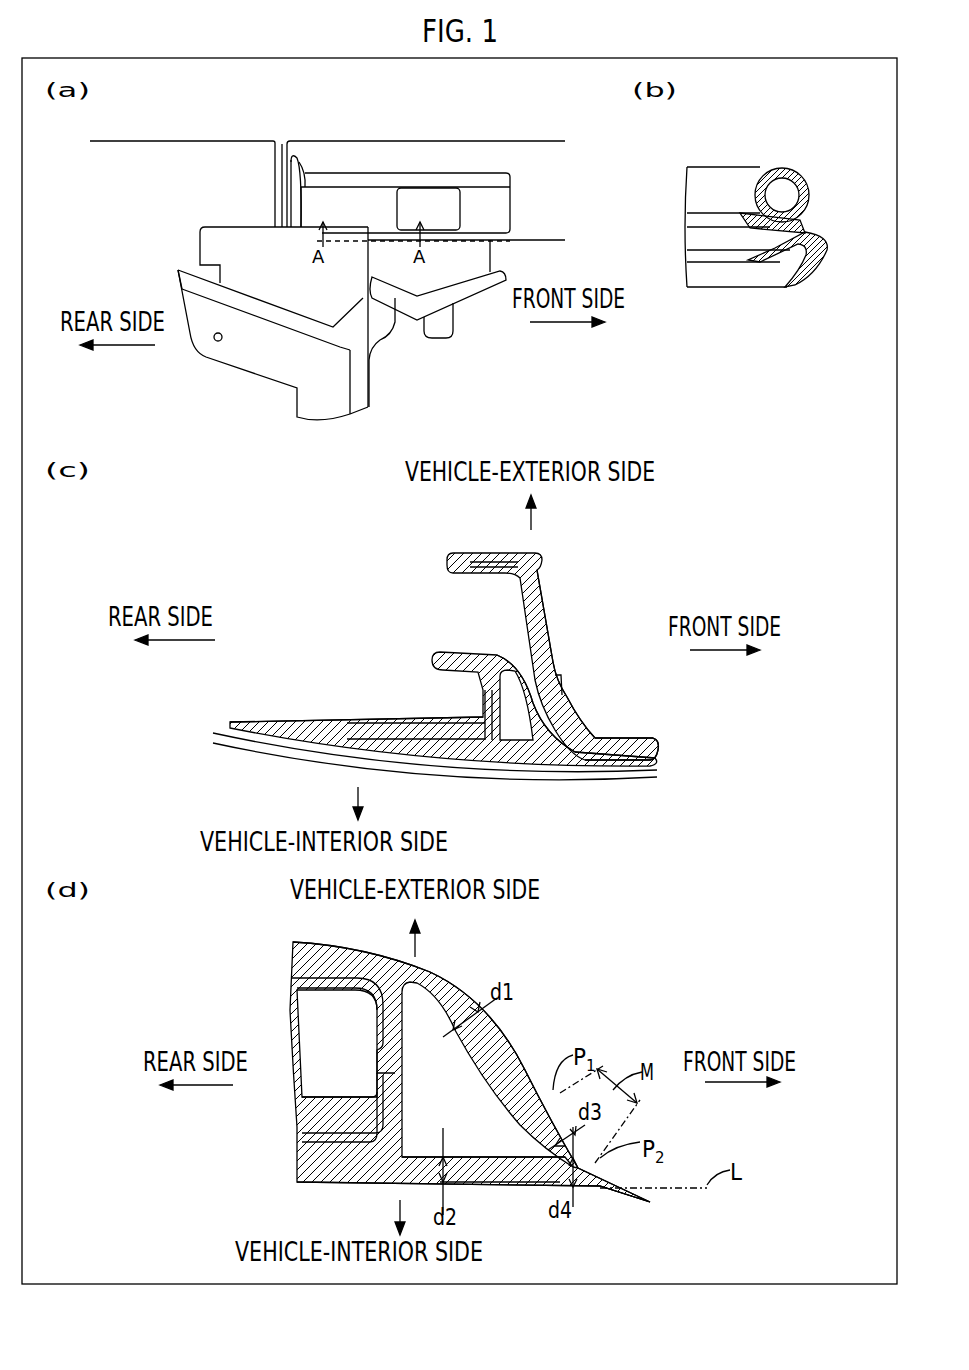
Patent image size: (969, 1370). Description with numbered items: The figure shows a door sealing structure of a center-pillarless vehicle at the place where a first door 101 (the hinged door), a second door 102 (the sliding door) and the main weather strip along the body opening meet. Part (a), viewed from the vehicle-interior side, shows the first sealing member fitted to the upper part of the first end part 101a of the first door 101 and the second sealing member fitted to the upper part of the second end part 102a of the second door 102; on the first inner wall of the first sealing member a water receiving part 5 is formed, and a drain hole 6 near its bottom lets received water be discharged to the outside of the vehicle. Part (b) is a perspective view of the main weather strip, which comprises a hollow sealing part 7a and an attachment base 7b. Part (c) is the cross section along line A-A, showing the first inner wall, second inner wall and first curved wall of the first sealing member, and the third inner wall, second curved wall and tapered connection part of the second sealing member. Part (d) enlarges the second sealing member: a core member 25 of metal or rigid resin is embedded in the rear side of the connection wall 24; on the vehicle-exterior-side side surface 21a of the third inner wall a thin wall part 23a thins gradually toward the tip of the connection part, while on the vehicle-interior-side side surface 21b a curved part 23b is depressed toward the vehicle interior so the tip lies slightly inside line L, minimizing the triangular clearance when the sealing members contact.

The water receiving part 5 is at (397, 300).
The drain hole 6 is at (419, 336).
The hollow sealing part 7a is at (803, 185).
The attachment base 7b is at (828, 242).
The vehicle-exterior-side side surface 21a is at (510, 1157).
The vehicle-interior-side side surface 21b is at (525, 1186).
The thin wall part 23a is at (583, 1167).
The curved part 23b is at (617, 1193).
The connection wall 24 is at (437, 1050).
The core member 25 is at (292, 998).
The first door 101 is at (482, 142).
The first end part 101a is at (293, 160).
The second door 102 is at (115, 142).
The second end part 102a is at (276, 142).